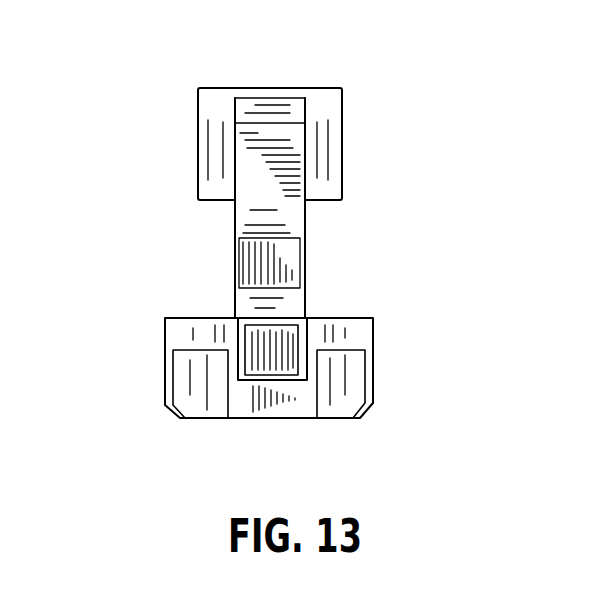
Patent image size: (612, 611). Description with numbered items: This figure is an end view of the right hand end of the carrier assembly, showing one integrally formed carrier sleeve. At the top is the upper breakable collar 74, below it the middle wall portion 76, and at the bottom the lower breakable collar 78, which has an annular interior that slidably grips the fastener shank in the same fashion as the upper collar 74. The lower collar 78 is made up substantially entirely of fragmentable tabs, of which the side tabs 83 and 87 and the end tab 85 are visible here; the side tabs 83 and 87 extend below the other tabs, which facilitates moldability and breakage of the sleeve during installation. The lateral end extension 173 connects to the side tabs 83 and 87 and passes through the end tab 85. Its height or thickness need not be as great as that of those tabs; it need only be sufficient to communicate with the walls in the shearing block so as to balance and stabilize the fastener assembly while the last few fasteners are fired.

The upper breakable collar 74 is at (317, 107).
The middle wall portion 76 is at (293, 260).
The lower breakable collar 78 is at (335, 380).
The lateral end extension 173 is at (318, 337).
The end tab 85 is at (258, 343).
The side tab 87 is at (188, 367).
The side tab 83 is at (355, 357).